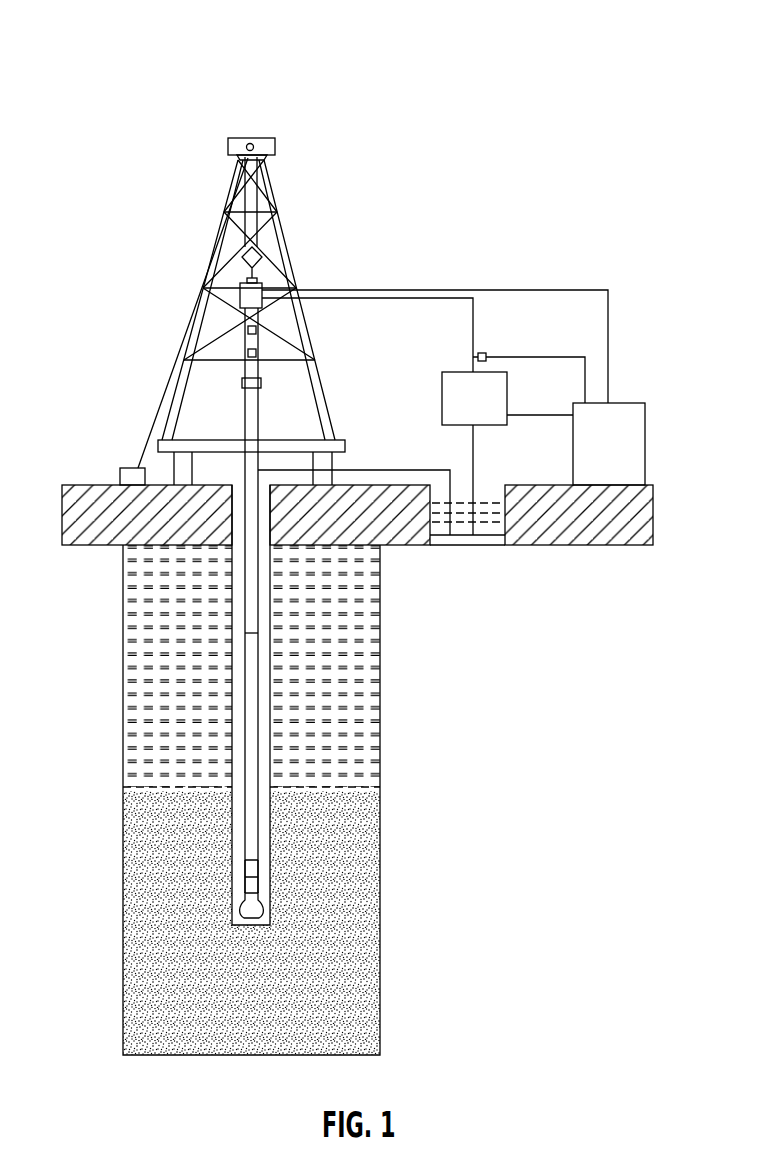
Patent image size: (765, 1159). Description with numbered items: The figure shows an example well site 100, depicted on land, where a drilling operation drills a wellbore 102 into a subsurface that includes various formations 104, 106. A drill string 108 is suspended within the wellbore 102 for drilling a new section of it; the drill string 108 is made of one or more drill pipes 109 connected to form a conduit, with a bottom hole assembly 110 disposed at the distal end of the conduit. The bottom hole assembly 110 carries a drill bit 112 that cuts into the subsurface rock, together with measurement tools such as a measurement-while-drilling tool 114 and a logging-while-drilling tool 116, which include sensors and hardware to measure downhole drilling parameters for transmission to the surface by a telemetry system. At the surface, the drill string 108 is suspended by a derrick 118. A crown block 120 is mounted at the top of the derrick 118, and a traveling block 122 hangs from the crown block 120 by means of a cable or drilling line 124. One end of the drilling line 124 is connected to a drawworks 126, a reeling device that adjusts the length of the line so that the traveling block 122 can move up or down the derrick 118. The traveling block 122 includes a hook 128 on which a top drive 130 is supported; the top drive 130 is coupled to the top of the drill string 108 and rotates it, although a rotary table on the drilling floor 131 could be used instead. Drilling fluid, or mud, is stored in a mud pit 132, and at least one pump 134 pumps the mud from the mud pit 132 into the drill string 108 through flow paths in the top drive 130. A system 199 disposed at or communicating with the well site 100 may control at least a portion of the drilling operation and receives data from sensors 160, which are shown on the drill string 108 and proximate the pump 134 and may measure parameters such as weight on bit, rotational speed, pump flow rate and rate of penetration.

The well site 100 is at (117, 42).
The wellbore 102 is at (262, 652).
The formation 104 is at (360, 610).
The formation 106 is at (355, 843).
The drill string 108 is at (245, 748).
The drill pipe 109 is at (245, 692).
The bottom hole assembly 110 is at (250, 870).
The drill bit 112 is at (261, 915).
The measurement-while-drilling tool 114 is at (258, 870).
The logging-while-drilling tool 116 is at (252, 884).
The derrick 118 is at (283, 233).
The crown block 120 is at (250, 138).
The traveling block 122 is at (263, 283).
The drilling line 124 is at (257, 206).
The drawworks 126 is at (132, 468).
The hook 128 is at (248, 276).
The top drive 130 is at (240, 292).
The drilling floor 131 is at (300, 440).
The mud pit 132 is at (503, 485).
The pump 134 is at (507, 396).
The sensor 160 is at (258, 352).
The system 199 is at (618, 403).